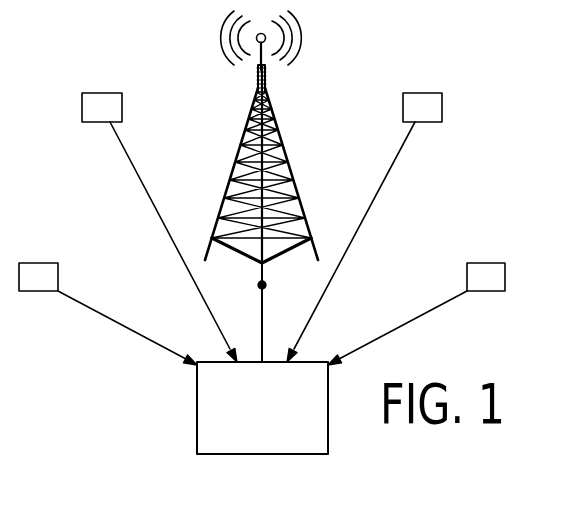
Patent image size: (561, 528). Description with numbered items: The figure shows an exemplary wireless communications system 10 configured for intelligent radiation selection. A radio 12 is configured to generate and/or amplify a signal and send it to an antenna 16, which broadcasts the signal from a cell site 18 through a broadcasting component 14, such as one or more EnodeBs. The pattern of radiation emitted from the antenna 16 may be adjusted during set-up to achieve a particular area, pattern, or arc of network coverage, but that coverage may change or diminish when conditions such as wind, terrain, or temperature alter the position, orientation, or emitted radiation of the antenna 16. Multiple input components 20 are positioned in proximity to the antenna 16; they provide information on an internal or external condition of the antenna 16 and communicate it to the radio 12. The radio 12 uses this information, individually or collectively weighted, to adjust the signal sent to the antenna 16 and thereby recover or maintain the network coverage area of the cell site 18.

The wireless communications system 10 is at (512, 80).
The radio 12 is at (207, 406).
The broadcasting component 14 is at (264, 44).
The antenna 16 is at (281, 140).
The cell site 18 is at (235, 267).
The input components 20 is at (100, 93).